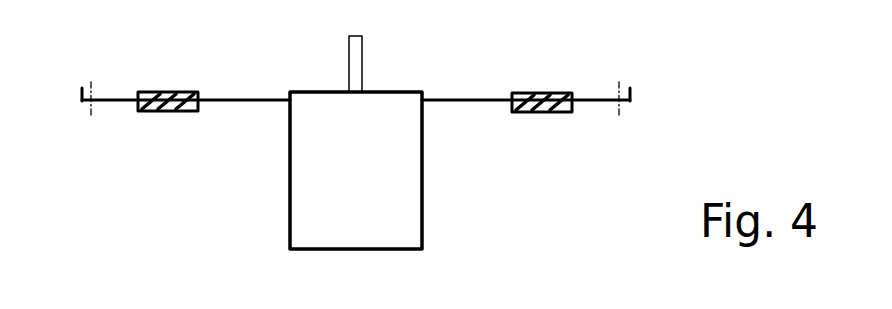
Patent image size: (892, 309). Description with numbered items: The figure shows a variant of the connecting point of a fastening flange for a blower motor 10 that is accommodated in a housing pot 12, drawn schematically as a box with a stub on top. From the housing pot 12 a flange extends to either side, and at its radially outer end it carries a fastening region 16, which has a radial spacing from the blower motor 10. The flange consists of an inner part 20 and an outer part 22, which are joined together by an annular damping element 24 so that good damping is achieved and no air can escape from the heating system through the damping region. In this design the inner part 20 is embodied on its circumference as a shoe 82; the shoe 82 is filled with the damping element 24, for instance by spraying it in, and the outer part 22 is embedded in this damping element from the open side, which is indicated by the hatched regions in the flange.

The blower motor 10 is at (360, 142).
The housing pot 12 is at (287, 217).
The fastening region 16 is at (659, 59).
The inner part 20 is at (229, 97).
The outer part 22 is at (112, 97).
The damping element 24 is at (517, 92).
The shoe 82 is at (553, 92).